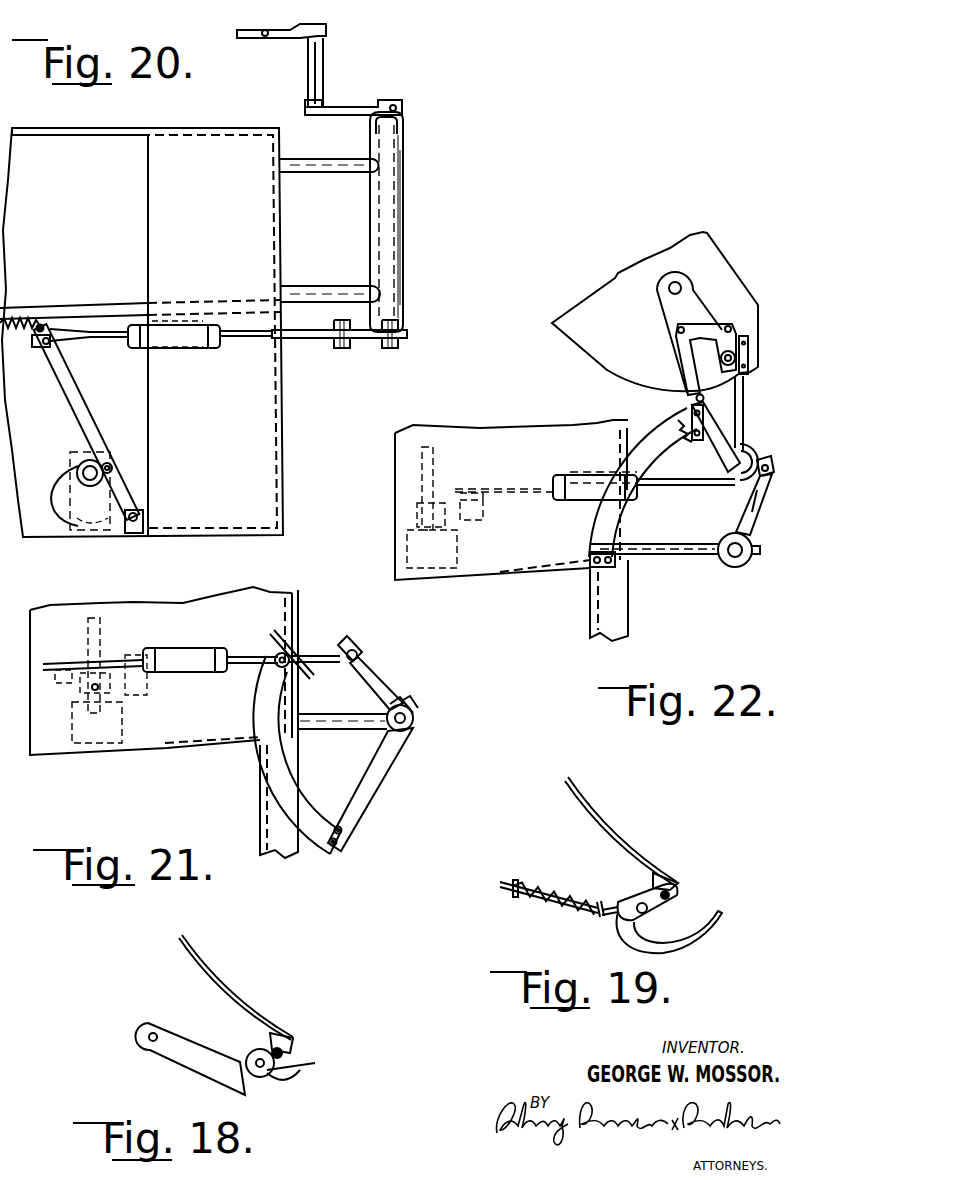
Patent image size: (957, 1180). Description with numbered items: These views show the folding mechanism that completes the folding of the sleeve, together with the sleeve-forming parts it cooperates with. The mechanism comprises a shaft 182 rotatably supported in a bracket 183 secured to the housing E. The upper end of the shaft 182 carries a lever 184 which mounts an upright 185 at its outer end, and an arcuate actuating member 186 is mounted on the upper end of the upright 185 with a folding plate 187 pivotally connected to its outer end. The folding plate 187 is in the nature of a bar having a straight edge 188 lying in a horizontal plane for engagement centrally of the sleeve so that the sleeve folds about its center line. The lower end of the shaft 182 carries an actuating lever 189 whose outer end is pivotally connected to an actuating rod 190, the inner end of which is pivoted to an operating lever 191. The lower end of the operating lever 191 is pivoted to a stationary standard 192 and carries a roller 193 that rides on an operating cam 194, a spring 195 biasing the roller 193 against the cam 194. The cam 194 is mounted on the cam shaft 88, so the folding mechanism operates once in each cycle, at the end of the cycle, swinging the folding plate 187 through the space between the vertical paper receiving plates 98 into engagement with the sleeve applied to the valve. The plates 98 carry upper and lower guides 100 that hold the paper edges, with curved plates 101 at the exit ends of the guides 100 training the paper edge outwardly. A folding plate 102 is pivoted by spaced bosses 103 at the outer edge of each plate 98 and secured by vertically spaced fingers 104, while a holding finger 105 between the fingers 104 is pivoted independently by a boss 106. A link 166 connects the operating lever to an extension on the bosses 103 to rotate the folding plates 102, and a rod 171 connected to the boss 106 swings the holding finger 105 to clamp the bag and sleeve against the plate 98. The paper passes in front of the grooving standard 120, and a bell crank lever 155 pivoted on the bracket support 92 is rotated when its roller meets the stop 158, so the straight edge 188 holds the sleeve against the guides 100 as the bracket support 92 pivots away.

In FIG. 20, the housing E is at (141, 332).
In FIG. 20, the cam shaft 88 is at (70, 491).
In FIG. 22, the cam shaft 88 is at (445, 506).
In FIG. 21, the cam shaft 88 is at (108, 674).
In FIG. 22, the bracket support 92 is at (672, 332).
In FIG. 19, the vertical paper receiving plates 98 is at (621, 831).
In FIG. 18, the vertical paper receiving plates 98 is at (236, 987).
In FIG. 22, the guides 100 is at (761, 428).
In FIG. 19, the curved plates 101 is at (689, 871).
In FIG. 18, the curved plates 101 is at (301, 1028).
In FIG. 18, the folding plate 102 is at (314, 1049).
In FIG. 18, the bosses 103 is at (250, 1043).
In FIG. 18, the fingers 104 is at (299, 1088).
In FIG. 19, the holding finger 105 is at (688, 933).
In FIG. 19, the boss 106 is at (676, 901).
In FIG. 22, the grooving standard 120 is at (655, 300).
In FIG. 22, the bell crank lever 155 is at (710, 337).
In FIG. 22, the stop 158 is at (764, 342).
In FIG. 22, the link 166 is at (700, 435).
In FIG. 18, the link 166 is at (190, 1059).
In FIG. 22, the rod 171 is at (664, 416).
In FIG. 19, the rod 171 is at (559, 876).
In FIG. 20, the shaft 182 is at (416, 121).
In FIG. 20, the bracket 183 is at (413, 222).
In FIG. 20, the lever 184 is at (353, 96).
In FIG. 22, the lever 184 is at (654, 572).
In FIG. 21, the lever 184 is at (379, 789).
In FIG. 20, the upright 185 is at (342, 72).
In FIG. 20, the actuating member 186 is at (296, 21).
In FIG. 22, the actuating member 186 is at (643, 476).
In FIG. 21, the actuating member 186 is at (301, 755).
In FIG. 21, the folding plate 187 is at (276, 642).
In FIG. 21, the straight edge 188 is at (325, 641).
In FIG. 20, the actuating lever 189 is at (339, 348).
In FIG. 22, the actuating lever 189 is at (727, 511).
In FIG. 21, the actuating lever 189 is at (391, 694).
In FIG. 20, the actuating rod 190 is at (161, 345).
In FIG. 22, the actuating rod 190 is at (595, 472).
In FIG. 21, the actuating rod 190 is at (198, 659).
In FIG. 20, the operating lever 191 is at (75, 422).
In FIG. 20, the stationary standard 192 is at (167, 516).
In FIG. 20, the roller 193 is at (130, 451).
In FIG. 21, the roller 193 is at (131, 697).
In FIG. 20, the operating cam 194 is at (66, 497).
In FIG. 21, the operating cam 194 is at (52, 692).
In FIG. 20, the spring 195 is at (30, 299).